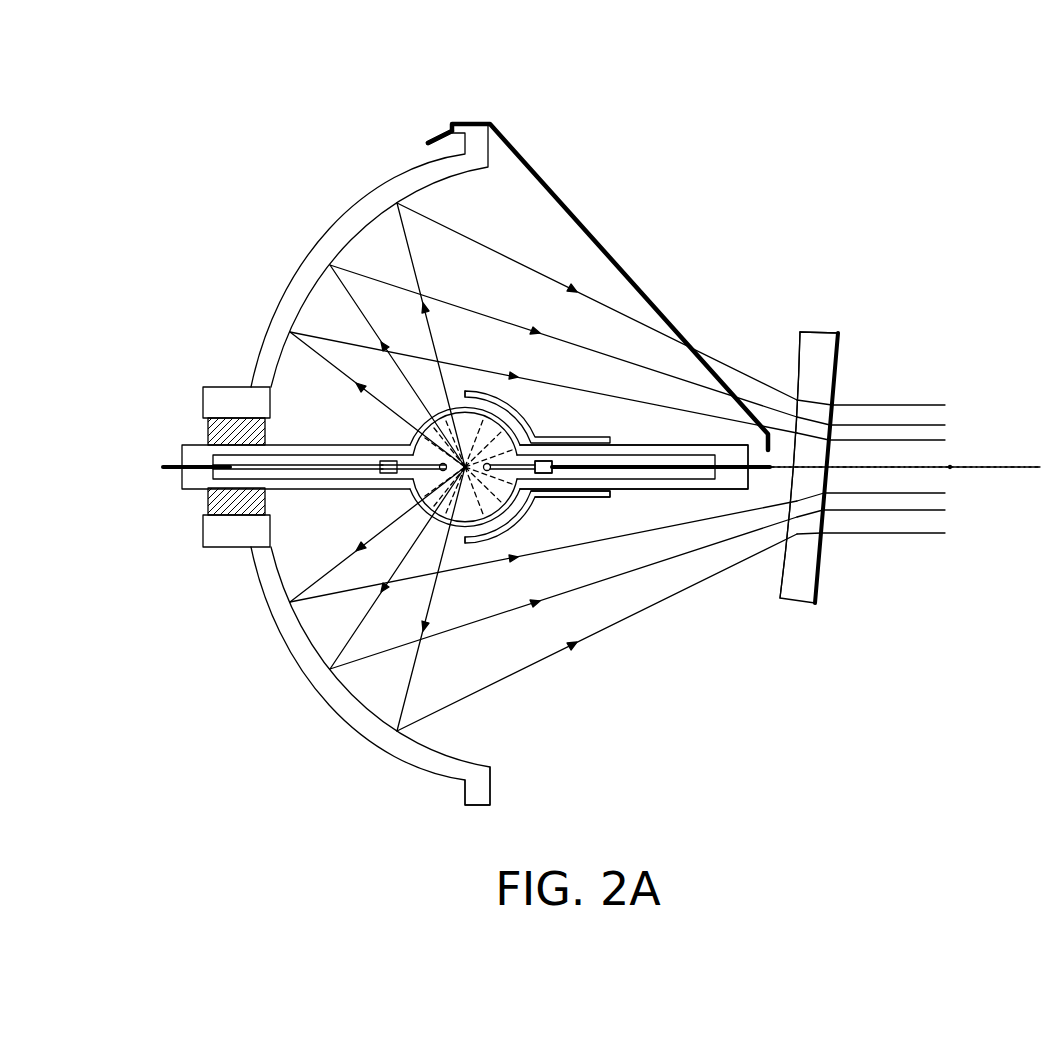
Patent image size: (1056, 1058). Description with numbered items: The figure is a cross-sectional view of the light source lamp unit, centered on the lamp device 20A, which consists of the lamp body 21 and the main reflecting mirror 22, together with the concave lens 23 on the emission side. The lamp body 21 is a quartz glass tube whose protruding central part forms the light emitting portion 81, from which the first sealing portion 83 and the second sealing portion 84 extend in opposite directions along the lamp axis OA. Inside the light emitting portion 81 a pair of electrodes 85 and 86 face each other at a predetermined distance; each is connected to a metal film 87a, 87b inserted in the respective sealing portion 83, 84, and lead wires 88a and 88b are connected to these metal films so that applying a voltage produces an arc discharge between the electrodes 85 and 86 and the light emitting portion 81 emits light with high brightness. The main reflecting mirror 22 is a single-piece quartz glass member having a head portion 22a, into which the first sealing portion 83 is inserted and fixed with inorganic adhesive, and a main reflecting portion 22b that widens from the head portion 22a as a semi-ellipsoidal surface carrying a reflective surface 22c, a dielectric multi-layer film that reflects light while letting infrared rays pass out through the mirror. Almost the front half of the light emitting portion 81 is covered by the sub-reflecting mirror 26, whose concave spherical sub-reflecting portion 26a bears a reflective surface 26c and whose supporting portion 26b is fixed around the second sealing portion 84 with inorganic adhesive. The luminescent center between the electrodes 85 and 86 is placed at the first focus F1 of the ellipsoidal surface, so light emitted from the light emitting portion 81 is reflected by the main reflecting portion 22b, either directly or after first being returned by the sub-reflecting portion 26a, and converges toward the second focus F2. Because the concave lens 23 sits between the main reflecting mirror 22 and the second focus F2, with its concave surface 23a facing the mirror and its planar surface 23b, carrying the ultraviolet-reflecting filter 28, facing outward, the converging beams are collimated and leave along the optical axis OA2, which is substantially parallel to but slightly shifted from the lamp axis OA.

The lamp device 20A is at (425, 143).
The lamp body 21 is at (627, 426).
The main reflecting mirror 22 is at (357, 217).
The head portion 22a is at (215, 550).
The main reflecting portion 22b is at (342, 715).
The reflective surface 22c is at (487, 760).
The concave lens 23 is at (812, 330).
The concave surface 23a is at (797, 346).
The planar surface 23b is at (842, 346).
The sub-reflecting mirror 26 is at (540, 515).
The sub-reflecting portion 26a is at (497, 388).
The supporting portion 26b is at (585, 497).
The reflective surface 26c is at (466, 547).
The filter 28 is at (841, 345).
The light emitting portion 81 is at (398, 438).
The first sealing portion 83 is at (290, 490).
The second sealing portion 84 is at (648, 489).
The electrode 85 is at (385, 470).
The electrode 86 is at (556, 442).
The metal film 87a is at (300, 462).
The metal film 87b is at (642, 464).
The lead wire 88a is at (173, 462).
The lead wire 88b is at (618, 266).
The first focus F1 is at (440, 470).
The second focus F2 is at (950, 465).
The lamp axis OA is at (882, 440).
The optical axis OA2 is at (980, 472).